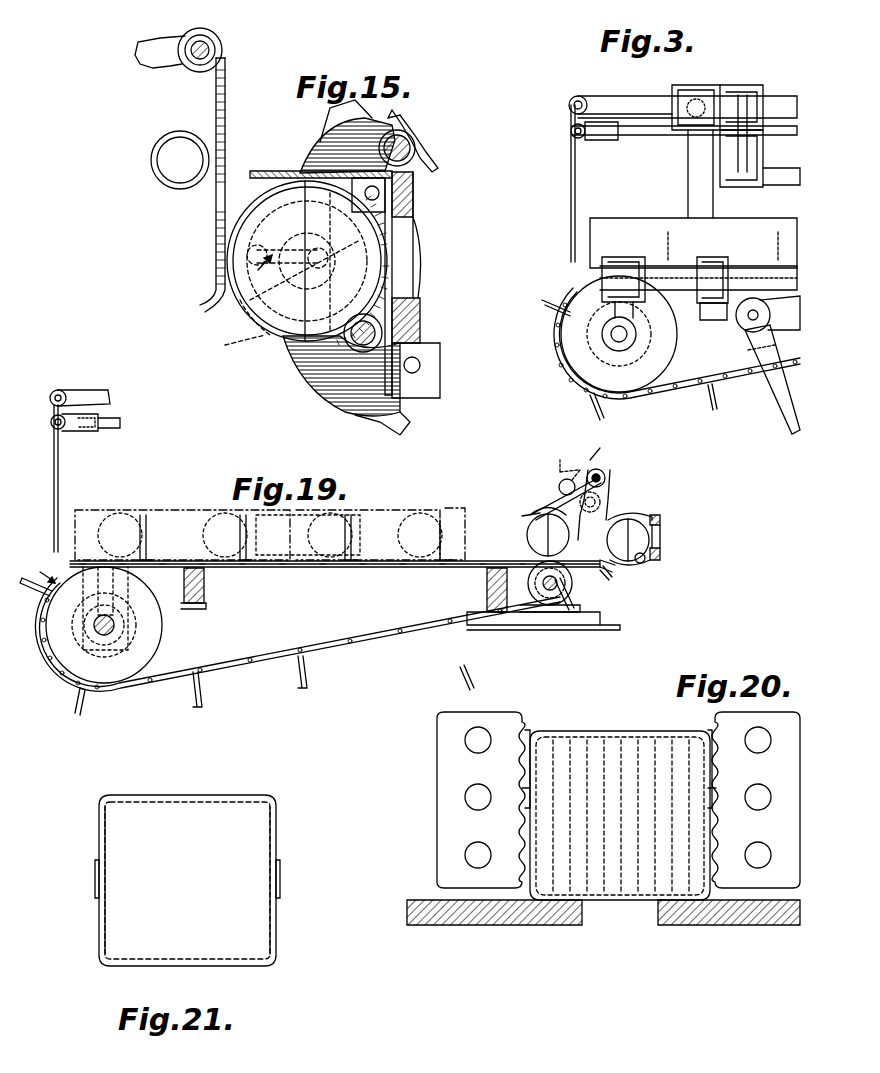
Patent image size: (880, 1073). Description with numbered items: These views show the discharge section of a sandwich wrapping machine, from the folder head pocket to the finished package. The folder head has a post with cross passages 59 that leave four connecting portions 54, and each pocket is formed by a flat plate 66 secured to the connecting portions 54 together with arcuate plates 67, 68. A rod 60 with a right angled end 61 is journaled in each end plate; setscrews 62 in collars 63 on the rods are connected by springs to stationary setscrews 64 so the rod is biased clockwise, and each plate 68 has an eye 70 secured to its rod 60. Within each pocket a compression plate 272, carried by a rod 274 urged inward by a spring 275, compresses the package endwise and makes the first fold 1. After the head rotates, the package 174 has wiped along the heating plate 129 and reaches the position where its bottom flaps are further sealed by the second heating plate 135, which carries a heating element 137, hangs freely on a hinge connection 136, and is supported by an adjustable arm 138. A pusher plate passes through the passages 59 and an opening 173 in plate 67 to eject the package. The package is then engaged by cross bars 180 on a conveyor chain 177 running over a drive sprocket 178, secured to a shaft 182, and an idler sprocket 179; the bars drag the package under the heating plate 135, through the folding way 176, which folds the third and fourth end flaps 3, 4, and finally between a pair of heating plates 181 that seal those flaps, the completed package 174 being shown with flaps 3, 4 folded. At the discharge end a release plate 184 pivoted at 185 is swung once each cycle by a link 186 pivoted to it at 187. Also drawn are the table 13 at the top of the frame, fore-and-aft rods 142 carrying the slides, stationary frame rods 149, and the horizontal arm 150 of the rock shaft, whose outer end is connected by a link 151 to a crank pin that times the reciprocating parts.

In FIG. 15, the first fold 1 is at (308, 263).
In FIG. 19, the first fold 1 is at (628, 540).
In FIG. 20, the third end flap 3 is at (530, 840).
In FIG. 21, the third end flap 3 is at (95, 912).
In FIG. 20, the fourth end flap 4 is at (528, 770).
In FIG. 21, the fourth end flap 4 is at (99, 845).
In FIG. 19, the table 13 is at (610, 632).
In FIG. 15, the connecting portions 54 is at (413, 200).
In FIG. 19, the connecting portions 54 is at (660, 518).
In FIG. 15, the cross passages 59 is at (418, 240).
In FIG. 19, the cross passages 59 is at (660, 533).
In FIG. 15, the rod 60 is at (415, 143).
In FIG. 15, the right angled end 61 is at (440, 385).
In FIG. 15, the setscrews 62 is at (340, 405).
In FIG. 15, the collars 63 is at (341, 376).
In FIG. 15, the stationary setscrews 64 is at (241, 318).
In FIG. 15, the flat plate 66 is at (270, 171).
In FIG. 19, the flat plate 66 is at (638, 515).
In FIG. 15, the arcuate plate 67 is at (428, 155).
In FIG. 19, the arcuate plate 67 is at (648, 540).
In FIG. 15, the arcuate plate 68 is at (400, 115).
In FIG. 19, the arcuate plate 68 is at (640, 563).
In FIG. 15, the eye 70 is at (330, 140).
In FIG. 19, the heating plate 129 is at (612, 577).
In FIG. 15, the second heating plate 135 is at (225, 110).
In FIG. 19, the second heating plate 135 is at (540, 505).
In FIG. 15, the hinge connection 136 is at (222, 48).
In FIG. 19, the hinge connection 136 is at (605, 475).
In FIG. 15, the heating element 137 is at (157, 160).
In FIG. 19, the heating element 137 is at (560, 464).
In FIG. 15, the arm 138 is at (155, 66).
In FIG. 19, the arm 138 is at (601, 485).
In FIG. 3, the fore-and-aft extending rods 142 is at (776, 175).
In FIG. 3, the stationary rods 149 is at (685, 282).
In FIG. 3, the horizontal arm 150 is at (770, 314).
In FIG. 3, the link 151 is at (786, 400).
In FIG. 15, the opening 173 is at (438, 170).
In FIG. 19, the package 174 is at (527, 524).
In FIG. 20, the package 174 is at (628, 710).
In FIG. 21, the package 174 is at (187, 880).
In FIG. 19, the folding way 176 is at (403, 505).
In FIG. 3, the conveyor chain 177 is at (566, 372).
In FIG. 19, the conveyor chain 177 is at (335, 635).
In FIG. 19, the drive sprocket 178 is at (575, 602).
In FIG. 3, the idler sprocket 179 is at (677, 337).
In FIG. 19, the idler sprocket 179 is at (148, 636).
In FIG. 3, the cross bars 180 is at (560, 308).
In FIG. 19, the cross bars 180 is at (148, 545).
In FIG. 3, the heating plates 181 is at (665, 198).
In FIG. 19, the heating plates 181 is at (168, 510).
In FIG. 20, the heating plates 181 is at (440, 823).
In FIG. 19, the shaft 182 is at (558, 583).
In FIG. 3, the release plate 184 is at (576, 178).
In FIG. 19, the release plate 184 is at (59, 483).
In FIG. 3, the pivot 185 is at (583, 96).
In FIG. 19, the pivot 185 is at (62, 390).
In FIG. 3, the link 186 is at (648, 137).
In FIG. 19, the link 186 is at (116, 428).
In FIG. 3, the pivot 187 is at (584, 136).
In FIG. 19, the pivot 187 is at (64, 430).
In FIG. 15, the compression plate 272 is at (241, 350).
In FIG. 15, the rod 274 is at (346, 232).
In FIG. 15, the spring 275 is at (348, 279).